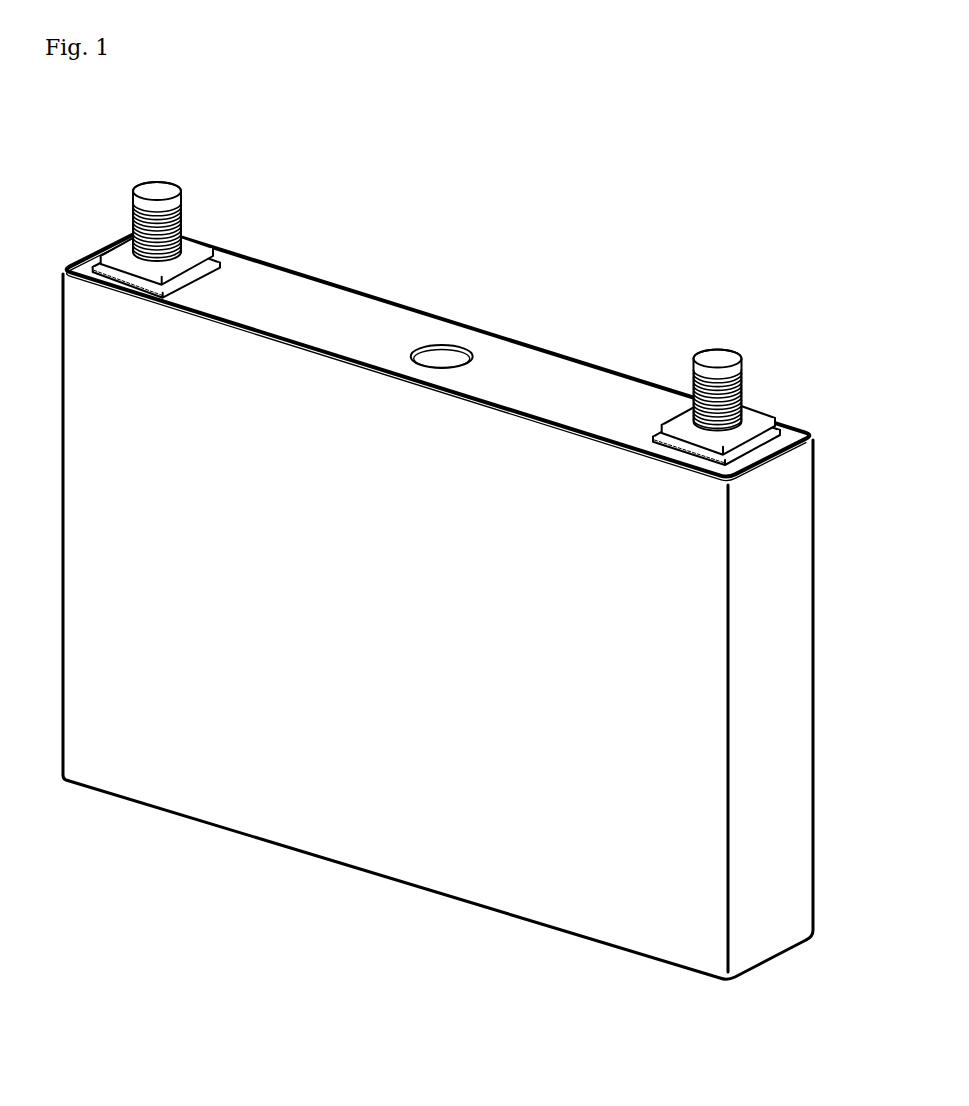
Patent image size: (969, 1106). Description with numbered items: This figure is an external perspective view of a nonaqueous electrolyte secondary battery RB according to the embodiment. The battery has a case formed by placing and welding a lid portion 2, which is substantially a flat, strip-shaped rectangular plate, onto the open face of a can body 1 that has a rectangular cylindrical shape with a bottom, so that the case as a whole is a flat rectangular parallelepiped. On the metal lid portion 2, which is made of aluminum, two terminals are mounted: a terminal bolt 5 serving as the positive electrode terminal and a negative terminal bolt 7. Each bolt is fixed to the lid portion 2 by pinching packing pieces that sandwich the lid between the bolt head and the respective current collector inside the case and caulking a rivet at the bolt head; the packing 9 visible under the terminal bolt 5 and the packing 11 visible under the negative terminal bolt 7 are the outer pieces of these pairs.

The nonaqueous electrolyte secondary battery RB is at (463, 212).
The can body 1 is at (283, 847).
The lid portion 2 is at (542, 362).
The terminal bolt 5 is at (155, 181).
The negative terminal bolt 7 is at (715, 349).
The packing 9 is at (193, 280).
The packing 11 is at (653, 437).